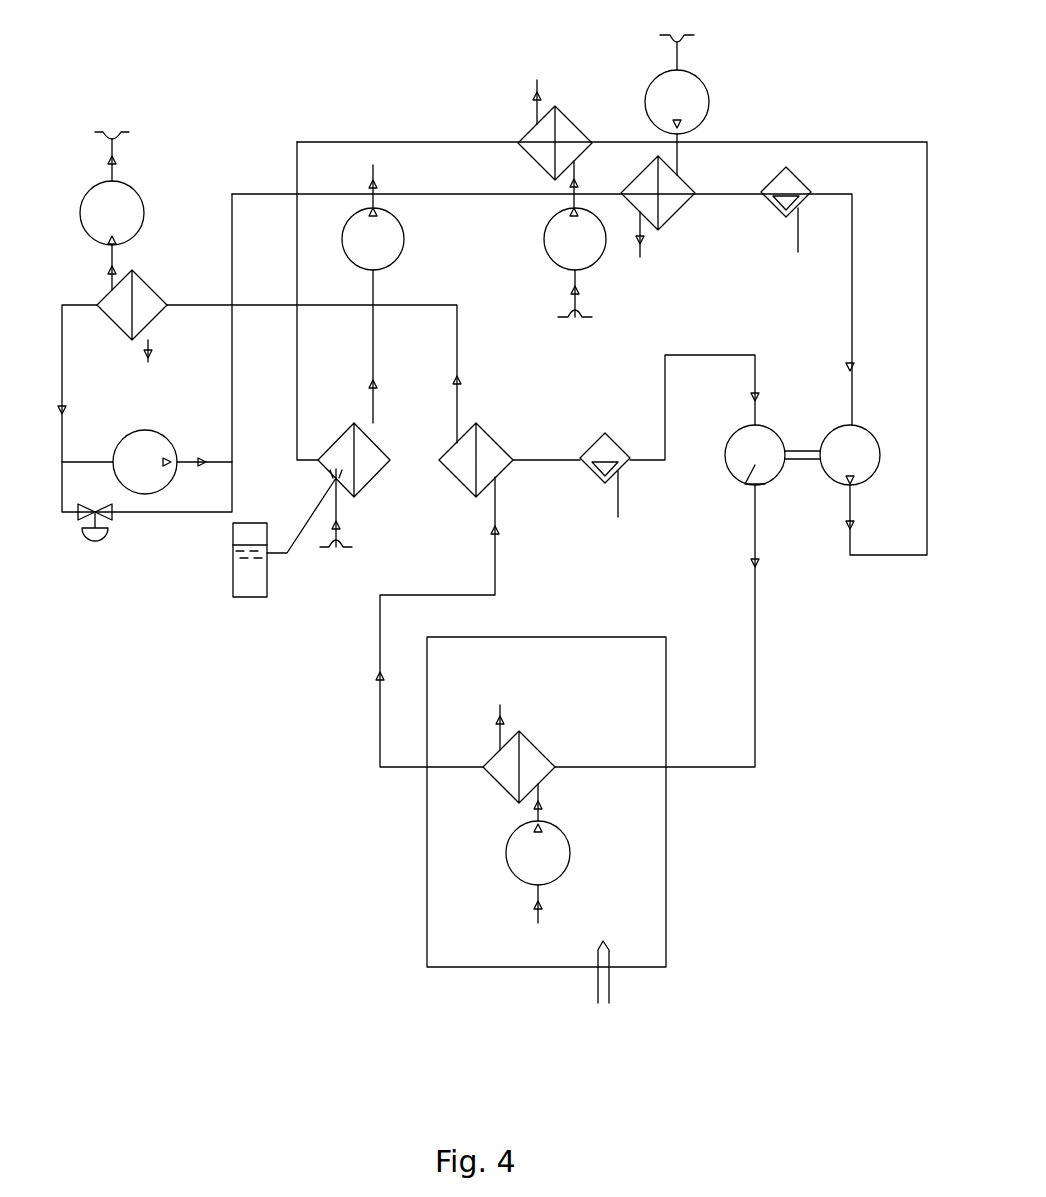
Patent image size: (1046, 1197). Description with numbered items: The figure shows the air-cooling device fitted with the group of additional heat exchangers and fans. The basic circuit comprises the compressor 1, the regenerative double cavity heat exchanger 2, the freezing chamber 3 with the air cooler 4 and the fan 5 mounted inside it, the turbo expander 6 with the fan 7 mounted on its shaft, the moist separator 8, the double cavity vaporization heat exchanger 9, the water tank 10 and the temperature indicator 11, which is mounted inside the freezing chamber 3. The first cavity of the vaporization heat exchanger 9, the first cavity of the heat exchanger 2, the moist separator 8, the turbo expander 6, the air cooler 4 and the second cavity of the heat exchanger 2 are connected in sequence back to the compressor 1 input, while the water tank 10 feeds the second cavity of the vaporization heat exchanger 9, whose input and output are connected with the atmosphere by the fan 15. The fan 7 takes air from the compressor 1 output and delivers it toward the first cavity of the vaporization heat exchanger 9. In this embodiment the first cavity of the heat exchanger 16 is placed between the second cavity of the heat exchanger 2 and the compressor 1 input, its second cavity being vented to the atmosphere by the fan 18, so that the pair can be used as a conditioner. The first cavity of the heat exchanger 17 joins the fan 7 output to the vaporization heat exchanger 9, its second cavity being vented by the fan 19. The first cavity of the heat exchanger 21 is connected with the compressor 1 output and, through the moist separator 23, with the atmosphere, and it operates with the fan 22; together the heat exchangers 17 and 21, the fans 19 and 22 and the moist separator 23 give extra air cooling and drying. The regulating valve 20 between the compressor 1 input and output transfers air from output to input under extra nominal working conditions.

The compressor 1 is at (152, 440).
The regenerative double cavity heat exchanger 2 is at (485, 445).
The freezing chamber 3 is at (437, 805).
The air cooler 4 is at (532, 758).
The fan 5 is at (555, 853).
The turbo expander 6 is at (765, 440).
The fan 7 is at (863, 437).
The moist separator 8 is at (605, 450).
The vaporization double cavity heat exchanger 9 is at (372, 452).
The water tank 10 is at (240, 568).
The temperature indicator 11 is at (610, 980).
The fan 15 is at (390, 240).
The double cavity heat exchanger 16 is at (143, 298).
The double cavity heat exchanger 17 is at (563, 132).
The fan 18 is at (130, 199).
The fan 19 is at (592, 252).
The regulating valve 20 is at (88, 544).
The double cavity heat exchanger 21 is at (673, 203).
The fan 22 is at (695, 88).
The moist separator 23 is at (787, 178).